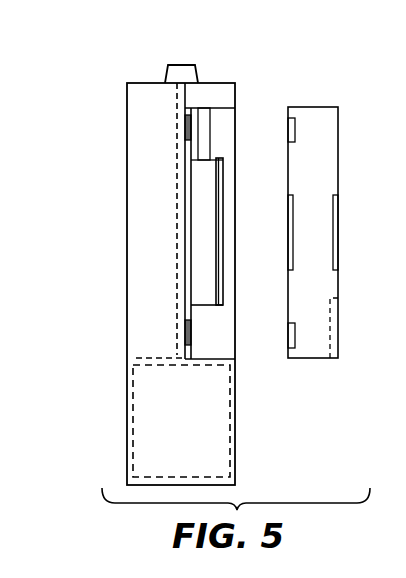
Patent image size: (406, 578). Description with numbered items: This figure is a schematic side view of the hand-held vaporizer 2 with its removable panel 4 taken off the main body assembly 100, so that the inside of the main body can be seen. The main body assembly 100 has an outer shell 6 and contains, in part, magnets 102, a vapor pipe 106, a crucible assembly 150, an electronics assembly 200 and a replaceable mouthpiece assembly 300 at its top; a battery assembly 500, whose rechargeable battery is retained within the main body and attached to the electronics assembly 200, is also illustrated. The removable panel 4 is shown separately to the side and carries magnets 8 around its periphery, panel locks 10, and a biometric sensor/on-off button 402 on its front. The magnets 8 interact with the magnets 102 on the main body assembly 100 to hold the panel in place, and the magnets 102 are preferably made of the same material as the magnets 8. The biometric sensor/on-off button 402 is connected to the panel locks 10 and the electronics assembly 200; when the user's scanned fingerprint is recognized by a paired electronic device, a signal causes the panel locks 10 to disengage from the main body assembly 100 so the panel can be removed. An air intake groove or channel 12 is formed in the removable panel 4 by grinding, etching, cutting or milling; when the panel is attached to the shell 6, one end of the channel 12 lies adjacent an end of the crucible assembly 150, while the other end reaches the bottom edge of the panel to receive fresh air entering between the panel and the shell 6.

The main body assembly 100 is at (213, 252).
The battery assembly 500 is at (166, 252).
The outer shell 6 is at (127, 203).
The mouthpiece assembly 300 is at (184, 60).
The magnets 102 is at (189, 122).
The vapor pipe 106 is at (205, 142).
The crucible assembly 150 is at (220, 168).
The electronics assembly 200 is at (181, 421).
The hand-held vaporizer 2 is at (320, 215).
The removable panel 4 is at (337, 338).
The magnets 8 is at (297, 130).
The panel locks 10 is at (287, 233).
The biometric sensor/on-off button 402 is at (338, 233).
The air intake groove or channel 12 is at (330, 312).